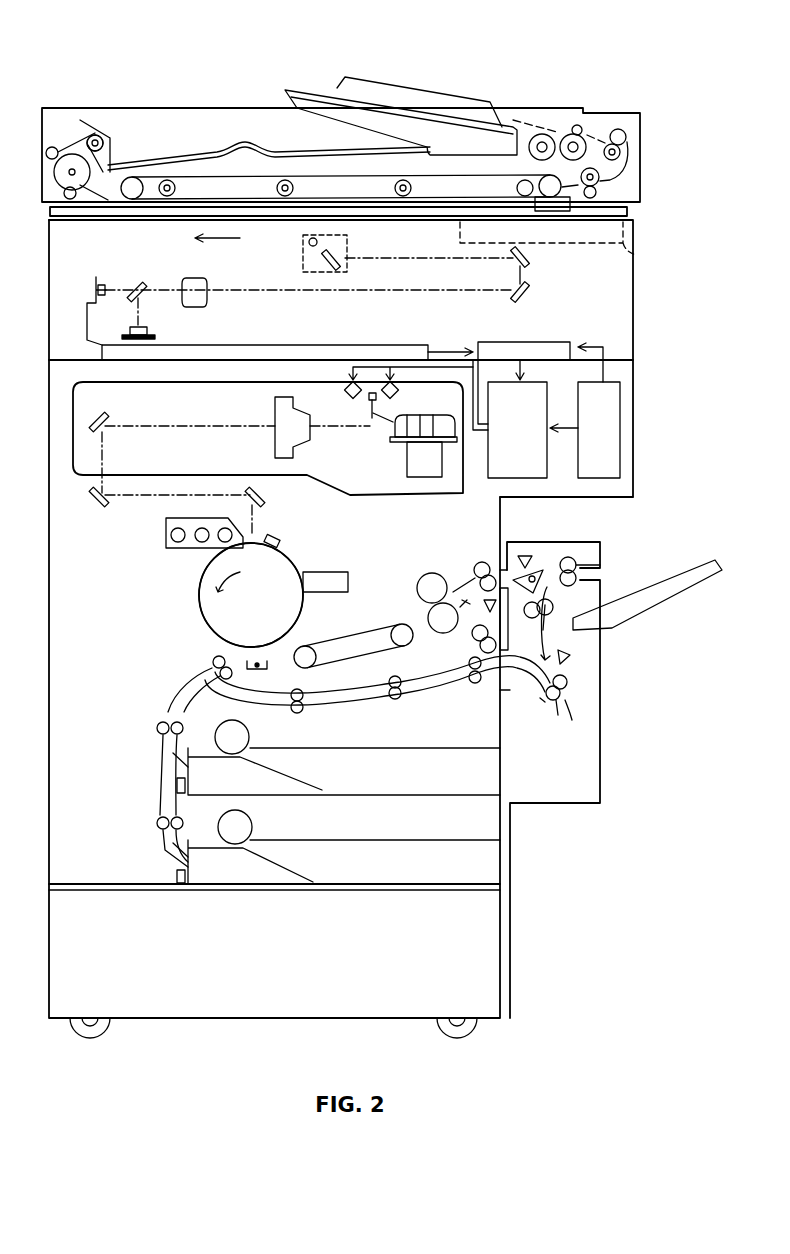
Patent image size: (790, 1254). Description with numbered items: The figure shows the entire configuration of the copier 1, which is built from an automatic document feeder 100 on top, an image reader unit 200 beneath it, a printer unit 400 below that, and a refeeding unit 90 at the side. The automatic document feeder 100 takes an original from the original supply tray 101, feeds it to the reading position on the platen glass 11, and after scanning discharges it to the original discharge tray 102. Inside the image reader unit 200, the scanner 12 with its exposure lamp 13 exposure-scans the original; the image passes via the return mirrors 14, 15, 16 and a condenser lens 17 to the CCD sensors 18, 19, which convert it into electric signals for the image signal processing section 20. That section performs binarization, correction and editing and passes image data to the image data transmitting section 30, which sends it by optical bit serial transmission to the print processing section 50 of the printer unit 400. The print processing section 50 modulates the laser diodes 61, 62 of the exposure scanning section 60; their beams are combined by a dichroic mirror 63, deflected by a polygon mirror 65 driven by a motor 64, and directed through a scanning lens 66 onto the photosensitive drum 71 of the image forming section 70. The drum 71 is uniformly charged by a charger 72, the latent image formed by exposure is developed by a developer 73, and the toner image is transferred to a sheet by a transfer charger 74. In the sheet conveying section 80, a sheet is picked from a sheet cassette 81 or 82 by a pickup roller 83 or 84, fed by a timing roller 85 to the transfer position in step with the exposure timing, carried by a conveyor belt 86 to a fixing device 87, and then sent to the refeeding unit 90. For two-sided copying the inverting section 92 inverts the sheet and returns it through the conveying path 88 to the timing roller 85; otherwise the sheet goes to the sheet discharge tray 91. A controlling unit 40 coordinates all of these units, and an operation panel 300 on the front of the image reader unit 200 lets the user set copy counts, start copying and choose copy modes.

The copier 1 is at (274, 524).
The automatic document feeder 100 is at (657, 159).
The original supply tray 101 is at (401, 110).
The original discharge tray 102 is at (160, 153).
The image reader unit 200 is at (656, 324).
The operation panel 300 is at (640, 251).
The printer unit 400 is at (656, 504).
The platen glass 11 is at (420, 216).
The scanner 12 is at (347, 243).
The exposure lamp 13 is at (308, 242).
The return mirror 14 is at (345, 263).
The return mirror 15 is at (527, 256).
The return mirror 16 is at (527, 296).
The condenser lens 17 is at (207, 294).
The CCD sensor 18 is at (104, 284).
The CCD sensor 19 is at (150, 331).
The image signal processing section 20 is at (355, 346).
The image data transmitting section 30 is at (505, 346).
The controlling unit 40 is at (622, 405).
The print processing section 50 is at (493, 478).
The exposure scanning section 60 is at (71, 380).
The laser diode 61 is at (400, 390).
The laser diode 62 is at (348, 391).
The dichroic mirror 63 is at (370, 422).
The motor 64 is at (420, 460).
The polygon mirror 65 is at (420, 432).
The scanning lens 66 is at (275, 432).
The image forming section 70 is at (345, 554).
The photosensitive drum 71 is at (251, 595).
The charger 72 is at (280, 540).
The developer 73 is at (165, 546).
The transfer charger 74 is at (268, 665).
The sheet conveying section 80 is at (349, 579).
The sheet cassette 81 is at (430, 748).
The sheet cassette 82 is at (400, 840).
The pickup roller 83 is at (250, 740).
The pickup roller 84 is at (253, 829).
The timing roller 85 is at (214, 660).
The conveyor belt 86 is at (340, 637).
The fixing device 87 is at (440, 568).
The conveying path 88 is at (358, 698).
The refeeding unit 90 is at (608, 765).
The sheet discharge tray 91 is at (667, 582).
The inverting section 92 is at (554, 726).